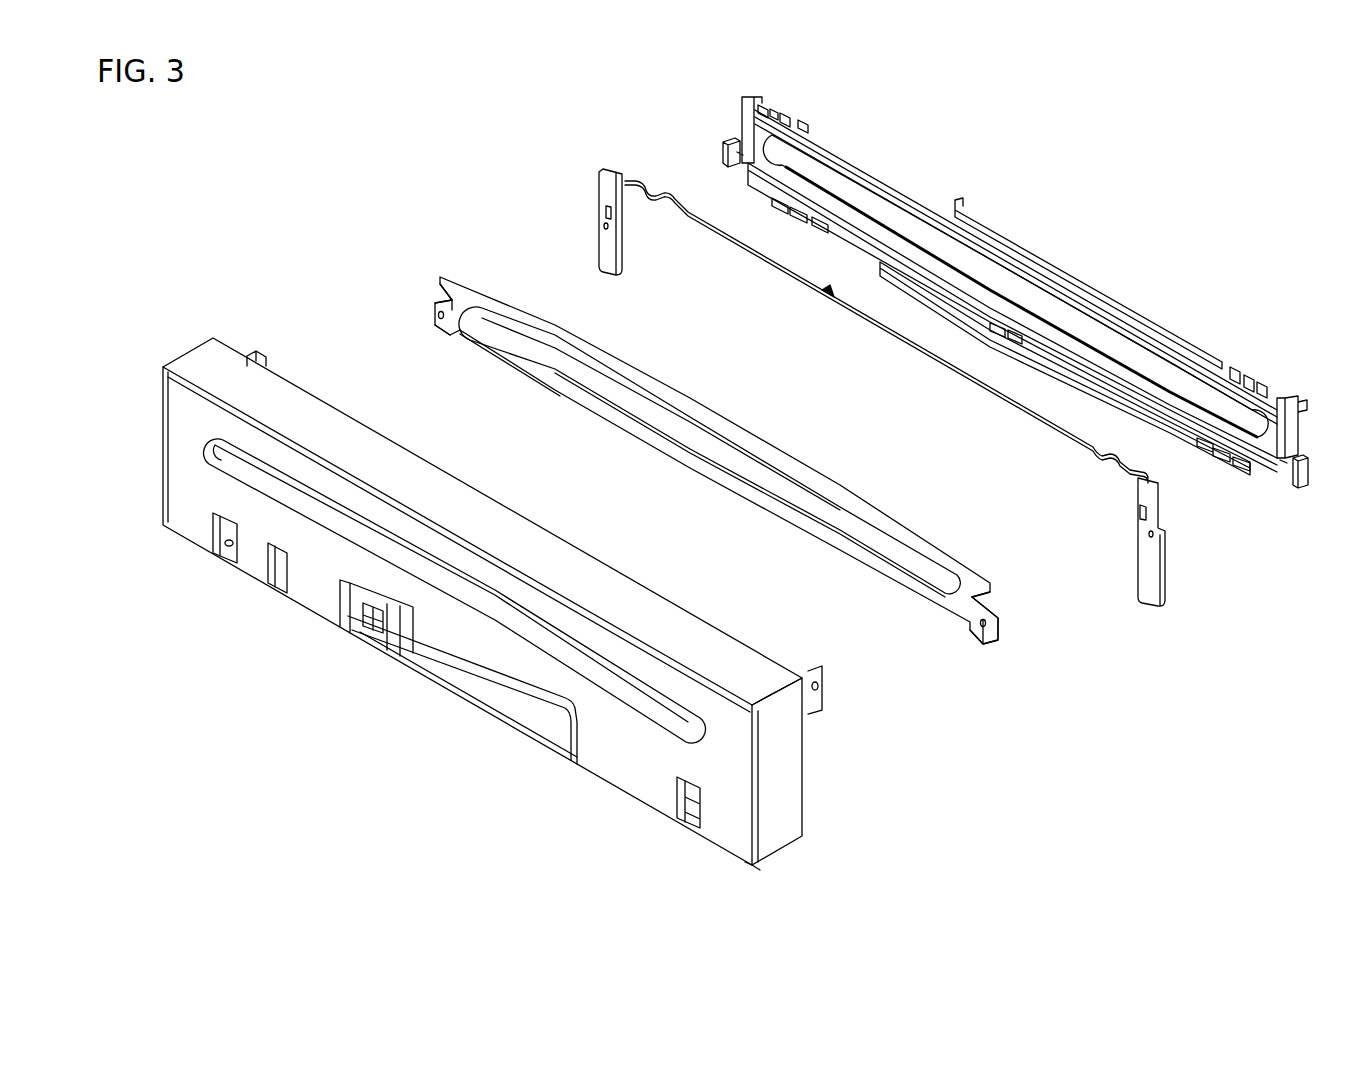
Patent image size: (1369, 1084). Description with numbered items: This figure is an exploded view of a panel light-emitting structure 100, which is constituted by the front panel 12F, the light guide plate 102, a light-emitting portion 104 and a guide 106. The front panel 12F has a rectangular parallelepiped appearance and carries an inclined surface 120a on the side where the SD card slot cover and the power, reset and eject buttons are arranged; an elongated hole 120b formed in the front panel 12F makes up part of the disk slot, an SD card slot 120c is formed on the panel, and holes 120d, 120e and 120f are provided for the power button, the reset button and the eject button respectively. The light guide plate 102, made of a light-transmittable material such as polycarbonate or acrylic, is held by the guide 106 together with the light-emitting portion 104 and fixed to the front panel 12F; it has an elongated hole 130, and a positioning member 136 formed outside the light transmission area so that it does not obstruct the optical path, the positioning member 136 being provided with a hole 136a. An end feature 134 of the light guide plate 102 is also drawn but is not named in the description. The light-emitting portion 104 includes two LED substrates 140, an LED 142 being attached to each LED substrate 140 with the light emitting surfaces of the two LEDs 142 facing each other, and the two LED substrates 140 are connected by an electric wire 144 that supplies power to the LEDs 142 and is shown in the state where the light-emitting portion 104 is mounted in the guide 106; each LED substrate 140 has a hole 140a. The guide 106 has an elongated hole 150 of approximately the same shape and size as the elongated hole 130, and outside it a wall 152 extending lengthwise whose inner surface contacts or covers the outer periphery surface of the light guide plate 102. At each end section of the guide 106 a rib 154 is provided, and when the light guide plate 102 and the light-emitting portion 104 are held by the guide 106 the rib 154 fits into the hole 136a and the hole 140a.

The panel light-emitting structure 100 is at (346, 66).
The front panel 12F is at (296, 370).
The light guide plate 102 is at (495, 278).
The light-emitting portion 104 is at (655, 170).
The guide 106 is at (850, 120).
The inclined surface 120a is at (752, 880).
The elongated hole 120b is at (355, 528).
The SD card slot 120c is at (473, 667).
The hole 120d is at (230, 547).
The hole 120e is at (280, 578).
The hole 120f is at (687, 800).
The elongated hole 130 is at (644, 416).
The end portion of shield plate 134 is at (422, 288).
The positioning member 136 is at (440, 328).
The hole 136a is at (440, 316).
The LED substrate 140 is at (622, 256).
The hole 140a is at (606, 228).
The LED 142 is at (600, 214).
The electric wire 144 is at (840, 318).
The elongated hole 150 is at (902, 200).
The wall 152 is at (1000, 228).
The rib 154 is at (723, 165).